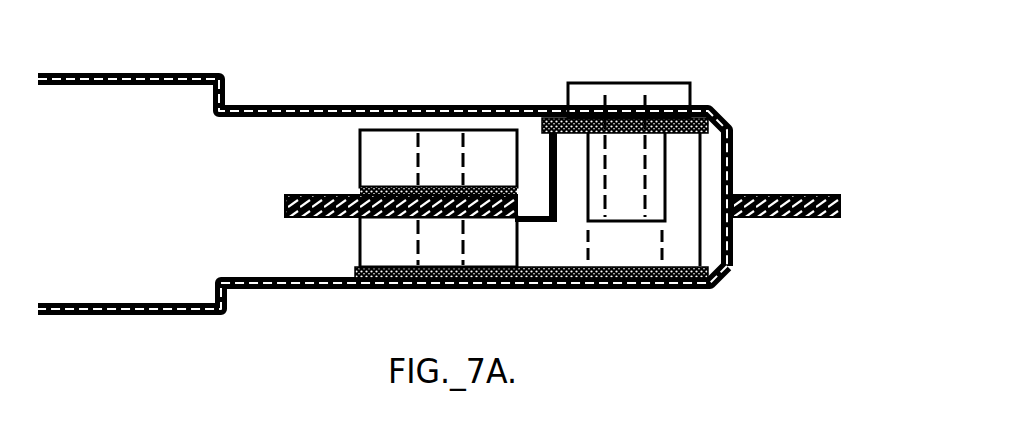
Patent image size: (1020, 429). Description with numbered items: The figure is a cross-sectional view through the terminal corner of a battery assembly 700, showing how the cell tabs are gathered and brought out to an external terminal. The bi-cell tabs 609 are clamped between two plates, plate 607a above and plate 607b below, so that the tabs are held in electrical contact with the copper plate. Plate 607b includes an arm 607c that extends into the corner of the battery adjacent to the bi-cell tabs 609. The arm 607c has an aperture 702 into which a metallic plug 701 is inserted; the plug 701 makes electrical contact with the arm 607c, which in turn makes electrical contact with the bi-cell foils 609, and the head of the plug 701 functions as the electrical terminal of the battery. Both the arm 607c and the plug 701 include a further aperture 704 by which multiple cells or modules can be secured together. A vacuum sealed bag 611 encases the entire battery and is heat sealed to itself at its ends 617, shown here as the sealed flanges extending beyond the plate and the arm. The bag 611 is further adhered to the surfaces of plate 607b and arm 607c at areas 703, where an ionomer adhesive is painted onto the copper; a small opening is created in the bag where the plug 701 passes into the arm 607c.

The housing assembly 700 is at (277, 63).
The vacuum sealed bag 611 is at (160, 316).
The bi-cell tabs 609 is at (276, 200).
The ends 617 is at (813, 194).
The plate 607a is at (490, 163).
The plate 607b is at (398, 243).
The arm 607c is at (733, 240).
The metallic plug 701 is at (665, 103).
The aperture 702 is at (665, 165).
The areas 703 is at (710, 110).
The aperture 704 is at (630, 80).